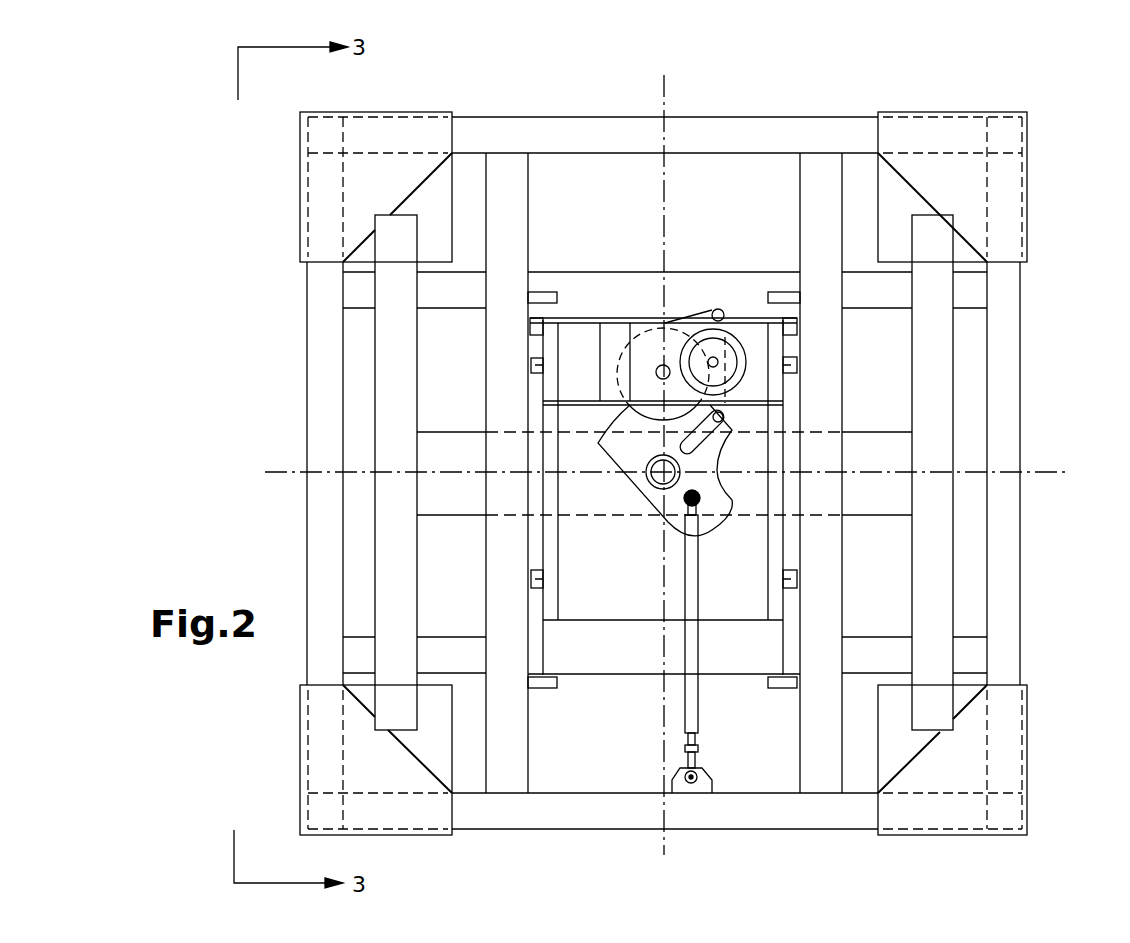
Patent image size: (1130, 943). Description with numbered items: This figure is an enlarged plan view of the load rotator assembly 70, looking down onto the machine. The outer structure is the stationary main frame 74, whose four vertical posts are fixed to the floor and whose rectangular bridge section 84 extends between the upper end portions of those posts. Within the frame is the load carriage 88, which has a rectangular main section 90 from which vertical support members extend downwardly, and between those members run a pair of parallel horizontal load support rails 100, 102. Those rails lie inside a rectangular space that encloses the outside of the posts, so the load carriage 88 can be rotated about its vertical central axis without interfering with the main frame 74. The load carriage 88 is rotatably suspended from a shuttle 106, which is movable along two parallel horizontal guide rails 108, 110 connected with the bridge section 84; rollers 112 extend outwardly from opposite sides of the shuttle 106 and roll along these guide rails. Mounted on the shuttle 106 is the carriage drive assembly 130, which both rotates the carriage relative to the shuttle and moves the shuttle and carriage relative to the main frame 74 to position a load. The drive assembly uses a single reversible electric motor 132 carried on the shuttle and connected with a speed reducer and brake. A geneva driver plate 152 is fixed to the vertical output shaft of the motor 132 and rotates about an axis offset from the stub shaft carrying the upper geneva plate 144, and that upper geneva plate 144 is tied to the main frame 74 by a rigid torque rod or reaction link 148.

The load rotator assembly 70 is at (778, 92).
The main frame 74 is at (1037, 145).
The bridge section 84 is at (472, 135).
The load carriage 88 is at (398, 245).
The main section 90 is at (637, 285).
The load support rail 100 is at (352, 288).
The load support rail 102 is at (353, 660).
The shuttle 106 is at (582, 597).
The guide rail 108 is at (537, 618).
The guide rail 110 is at (790, 650).
The rollers 112 is at (530, 365).
The carriage drive assembly 130 is at (613, 305).
The reversible electric motor 132 is at (732, 348).
The upper geneva plate 144 is at (630, 455).
The reaction link 148 is at (690, 697).
The geneva driver plate 152 is at (712, 309).